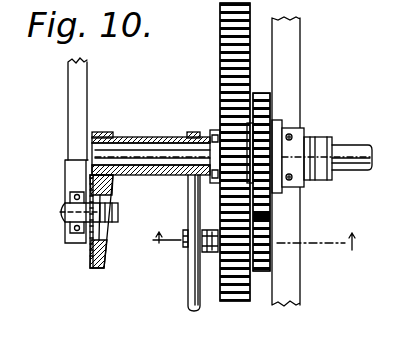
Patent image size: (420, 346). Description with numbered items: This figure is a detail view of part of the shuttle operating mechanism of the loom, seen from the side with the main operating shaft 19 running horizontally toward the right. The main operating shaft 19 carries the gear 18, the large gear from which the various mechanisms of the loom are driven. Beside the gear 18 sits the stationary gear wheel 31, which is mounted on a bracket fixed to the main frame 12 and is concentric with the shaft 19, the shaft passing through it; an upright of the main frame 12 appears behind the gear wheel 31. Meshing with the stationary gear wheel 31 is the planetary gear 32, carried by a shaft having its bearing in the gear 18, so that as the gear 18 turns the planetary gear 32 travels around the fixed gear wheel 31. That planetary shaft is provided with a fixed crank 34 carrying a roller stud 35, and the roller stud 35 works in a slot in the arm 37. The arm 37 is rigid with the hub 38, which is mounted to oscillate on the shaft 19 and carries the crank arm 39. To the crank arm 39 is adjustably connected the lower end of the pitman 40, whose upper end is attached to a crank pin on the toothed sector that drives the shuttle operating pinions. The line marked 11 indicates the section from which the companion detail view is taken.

The section line 11 is at (150, 249).
The frame column 12 is at (290, 294).
The large gear 18 is at (231, 304).
The drive shaft 19 is at (350, 147).
The small gear 31 is at (265, 92).
The gear collar 32 is at (253, 262).
The clutch member 34 is at (205, 252).
The clutch block 35 is at (183, 248).
The lever bar 37 is at (192, 305).
The hollow shaft 38 is at (145, 137).
The toothed segment arm 39 is at (97, 270).
The support column 40 is at (73, 101).